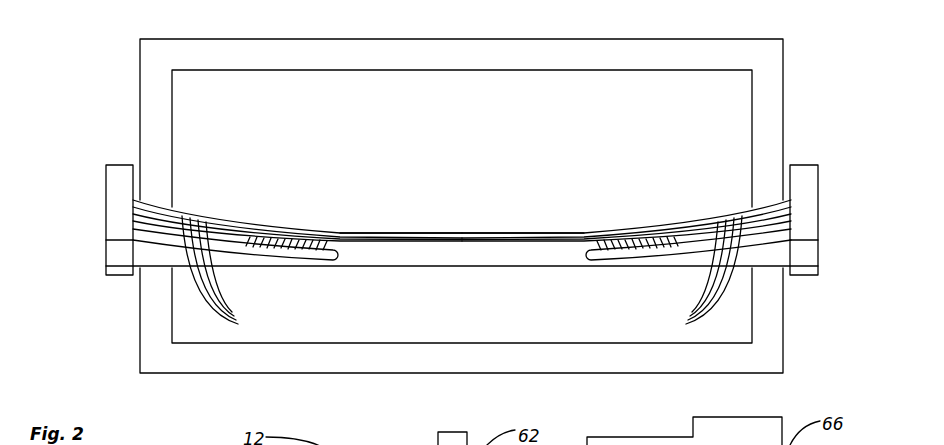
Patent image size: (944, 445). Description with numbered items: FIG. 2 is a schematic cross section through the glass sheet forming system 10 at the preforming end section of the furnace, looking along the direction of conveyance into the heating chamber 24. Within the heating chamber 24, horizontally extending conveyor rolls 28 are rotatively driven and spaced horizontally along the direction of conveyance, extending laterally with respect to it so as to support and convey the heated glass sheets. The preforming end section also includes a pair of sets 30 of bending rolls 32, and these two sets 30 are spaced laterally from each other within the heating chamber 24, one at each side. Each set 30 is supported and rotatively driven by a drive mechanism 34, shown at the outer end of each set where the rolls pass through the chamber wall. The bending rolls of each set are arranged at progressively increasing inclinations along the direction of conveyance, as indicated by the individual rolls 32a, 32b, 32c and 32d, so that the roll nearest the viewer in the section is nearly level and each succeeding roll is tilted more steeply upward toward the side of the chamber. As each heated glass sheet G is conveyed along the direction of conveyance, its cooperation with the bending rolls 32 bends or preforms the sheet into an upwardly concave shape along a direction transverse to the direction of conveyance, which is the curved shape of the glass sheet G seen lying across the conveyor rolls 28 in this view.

The fiber optic assembly 10 is at (630, 30).
The heating chamber 24 is at (284, 76).
The conveyor rolls 28 is at (455, 267).
The sets of bending rolls 30 is at (188, 186).
The bending rolls 32 is at (462, 273).
The bending roll 32a is at (252, 222).
The bending roll 32b is at (230, 222).
The bending roll 32c is at (212, 220).
The bending roll 32d is at (197, 218).
The drive mechanism 34 is at (116, 194).
The heated glass sheet G is at (428, 233).